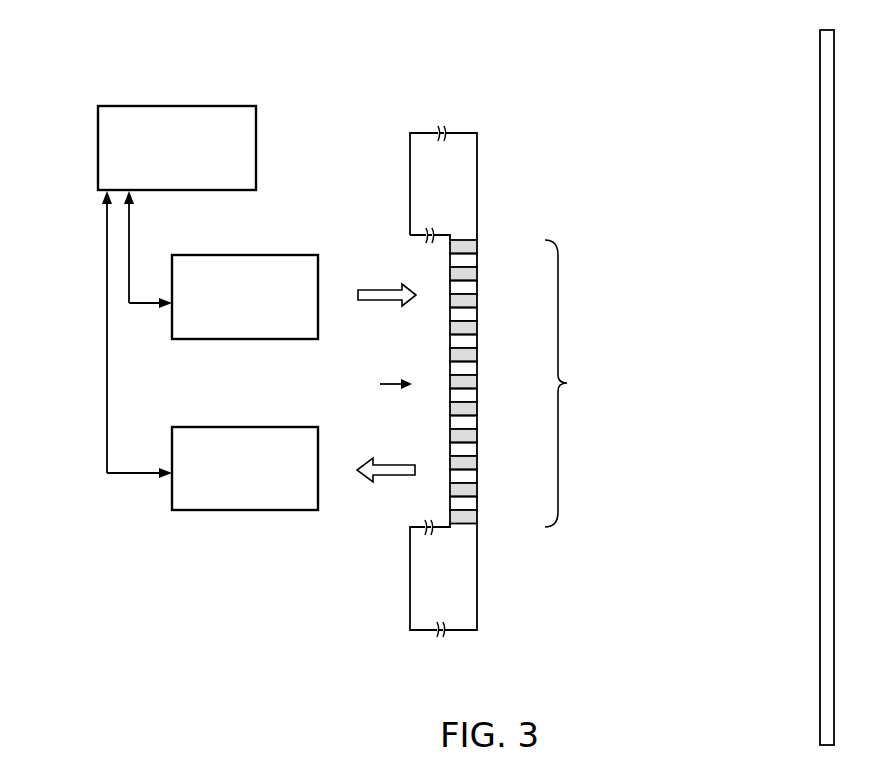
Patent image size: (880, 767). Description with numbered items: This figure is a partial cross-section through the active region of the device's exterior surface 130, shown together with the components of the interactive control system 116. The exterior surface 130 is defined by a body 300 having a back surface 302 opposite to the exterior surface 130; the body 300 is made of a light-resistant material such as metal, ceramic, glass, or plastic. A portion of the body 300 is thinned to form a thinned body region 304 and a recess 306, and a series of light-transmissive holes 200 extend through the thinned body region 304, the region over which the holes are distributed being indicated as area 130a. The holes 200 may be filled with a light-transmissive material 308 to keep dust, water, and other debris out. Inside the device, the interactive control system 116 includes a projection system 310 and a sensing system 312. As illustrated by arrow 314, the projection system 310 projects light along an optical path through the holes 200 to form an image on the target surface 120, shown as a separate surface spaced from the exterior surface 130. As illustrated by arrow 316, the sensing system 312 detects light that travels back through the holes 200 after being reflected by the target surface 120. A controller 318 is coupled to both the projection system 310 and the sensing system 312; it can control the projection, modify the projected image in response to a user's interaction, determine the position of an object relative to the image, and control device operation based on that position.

The interactive control system 116 is at (272, 60).
The controller 318 is at (108, 105).
The projection system 310 is at (200, 340).
The sensing system 312 is at (190, 511).
The arrow 314 is at (397, 301).
The arrow 316 is at (398, 479).
The recess 306 is at (375, 384).
The exterior surface 130 is at (446, 380).
The body 300 is at (441, 380).
The back surface 302 is at (410, 147).
The thinned body region 304 is at (505, 365).
The pattern area of reticle 130a is at (535, 367).
The light-transmissive holes 200 is at (486, 271).
The light-transmissive material 308 is at (468, 331).
The target surface 120 is at (820, 68).